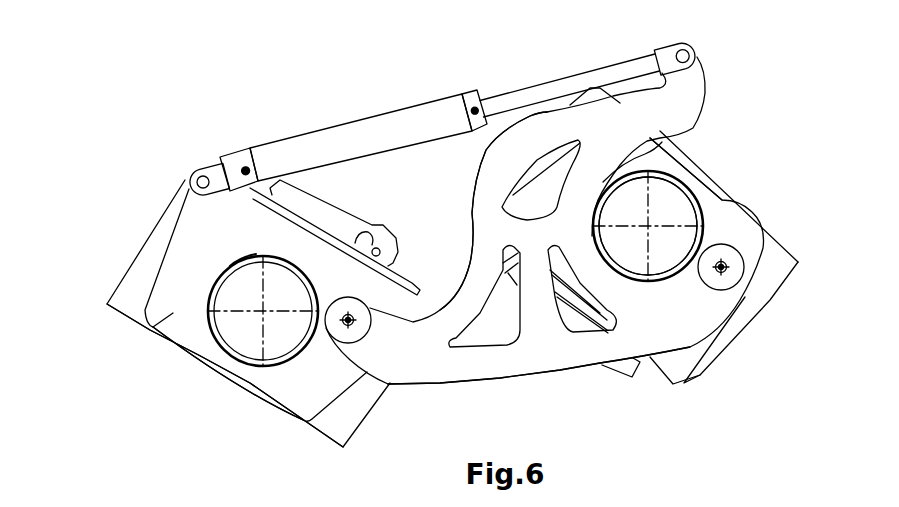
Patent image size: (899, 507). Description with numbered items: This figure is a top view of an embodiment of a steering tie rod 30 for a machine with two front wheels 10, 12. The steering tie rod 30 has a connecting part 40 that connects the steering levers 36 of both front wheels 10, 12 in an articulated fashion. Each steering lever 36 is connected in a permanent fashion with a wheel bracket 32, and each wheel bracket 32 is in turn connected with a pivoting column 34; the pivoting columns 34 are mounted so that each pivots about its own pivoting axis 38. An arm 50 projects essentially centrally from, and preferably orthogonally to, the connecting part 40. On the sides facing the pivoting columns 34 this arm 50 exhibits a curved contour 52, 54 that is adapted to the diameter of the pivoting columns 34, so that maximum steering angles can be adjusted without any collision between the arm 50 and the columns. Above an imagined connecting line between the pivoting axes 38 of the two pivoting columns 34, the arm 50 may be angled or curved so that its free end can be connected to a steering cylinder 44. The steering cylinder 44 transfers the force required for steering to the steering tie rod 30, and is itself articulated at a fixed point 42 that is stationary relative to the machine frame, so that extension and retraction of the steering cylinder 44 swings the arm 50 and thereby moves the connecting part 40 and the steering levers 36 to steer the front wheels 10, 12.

The front wheel 10 is at (770, 280).
The front wheel 12 is at (135, 290).
The steering tie rod 30 is at (560, 259).
The wheel bracket 32 is at (173, 315).
The pivoting column 34 is at (667, 215).
The steering lever 36 is at (352, 321).
The pivoting axis 38 is at (263, 313).
The connecting part 40 is at (494, 381).
The fixed point 42 is at (202, 174).
The steering cylinder 44 is at (419, 108).
The arm 50 is at (490, 180).
The curved contour 52 is at (466, 228).
The curved contour 54 is at (650, 168).